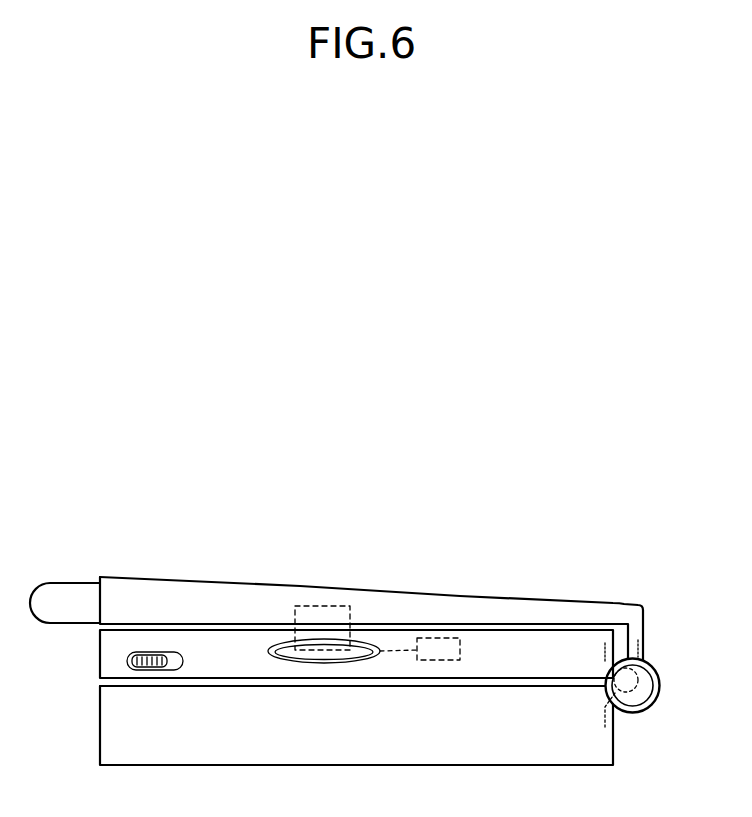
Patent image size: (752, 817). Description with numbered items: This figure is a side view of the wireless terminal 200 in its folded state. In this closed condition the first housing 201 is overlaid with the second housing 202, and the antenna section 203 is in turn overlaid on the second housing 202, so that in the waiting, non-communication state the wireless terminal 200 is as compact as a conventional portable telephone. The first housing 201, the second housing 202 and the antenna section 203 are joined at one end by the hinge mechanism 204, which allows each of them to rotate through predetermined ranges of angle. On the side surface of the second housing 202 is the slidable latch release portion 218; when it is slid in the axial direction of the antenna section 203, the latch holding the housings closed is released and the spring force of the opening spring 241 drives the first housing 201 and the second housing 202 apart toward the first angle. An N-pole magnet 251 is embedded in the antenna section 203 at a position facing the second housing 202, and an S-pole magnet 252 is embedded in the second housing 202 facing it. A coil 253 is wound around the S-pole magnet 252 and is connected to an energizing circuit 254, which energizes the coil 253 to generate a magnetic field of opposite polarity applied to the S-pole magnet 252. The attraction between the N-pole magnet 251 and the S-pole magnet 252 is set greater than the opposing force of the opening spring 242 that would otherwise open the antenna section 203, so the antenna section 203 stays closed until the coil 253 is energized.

The wireless terminal 200 is at (586, 586).
The first housing 201 is at (100, 748).
The second housing 202 is at (100, 668).
The antenna section 203 is at (360, 590).
The hinge mechanism 204 is at (660, 678).
The slidable latch release portion 218 is at (152, 671).
The opening spring 241 is at (606, 725).
The opening spring 242 is at (641, 645).
The N-pole magnet 251 is at (295, 610).
The S-pole magnet 252 is at (335, 664).
The coil 253 is at (269, 652).
The energizing circuit 254 is at (460, 650).